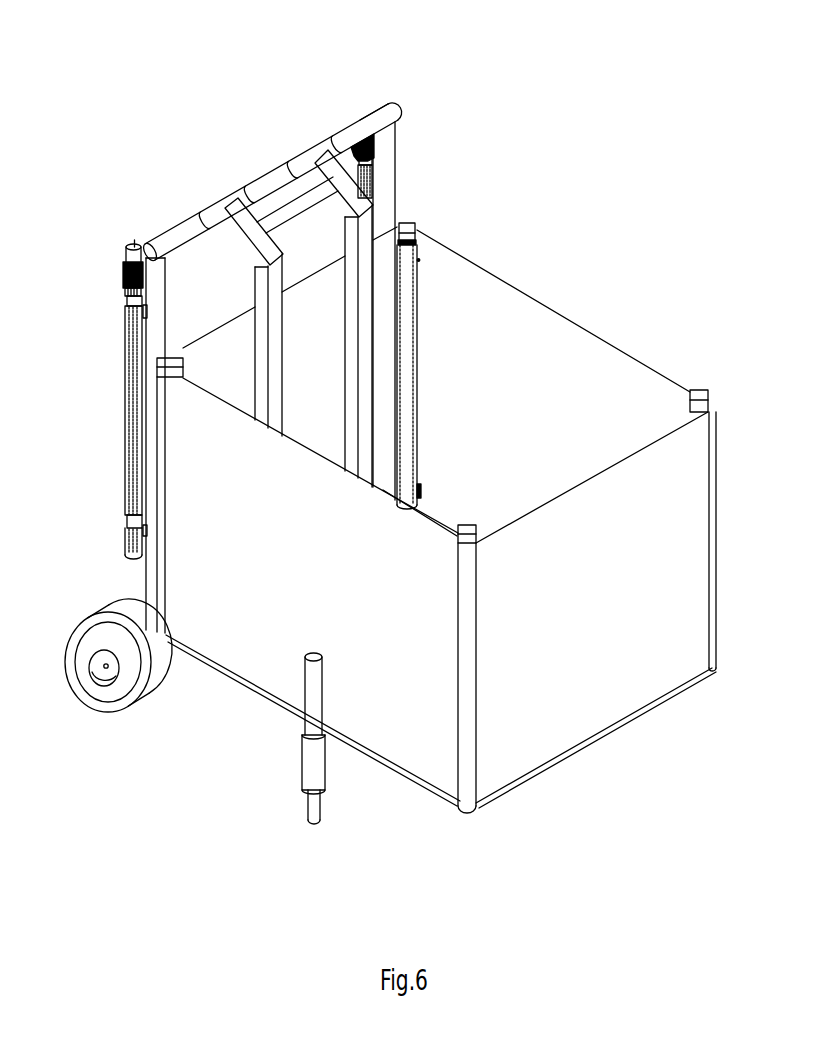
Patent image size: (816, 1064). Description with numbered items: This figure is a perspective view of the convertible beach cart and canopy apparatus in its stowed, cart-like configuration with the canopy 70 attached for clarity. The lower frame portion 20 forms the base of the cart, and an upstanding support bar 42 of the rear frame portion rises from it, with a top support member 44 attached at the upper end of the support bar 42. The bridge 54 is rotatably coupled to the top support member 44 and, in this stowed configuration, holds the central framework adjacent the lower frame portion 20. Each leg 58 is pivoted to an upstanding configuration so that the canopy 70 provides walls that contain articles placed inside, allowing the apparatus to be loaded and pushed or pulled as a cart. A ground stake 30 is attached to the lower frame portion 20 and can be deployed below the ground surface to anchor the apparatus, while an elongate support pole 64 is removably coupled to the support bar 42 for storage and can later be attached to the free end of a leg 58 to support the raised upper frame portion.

The lower frame portion 20 is at (238, 721).
The ground stake 30 is at (297, 816).
The upstanding support bar 42 is at (382, 202).
The top support member 44 is at (360, 127).
The bridge 54 is at (222, 234).
The leg 58 is at (408, 303).
The elongate support pole 64 is at (373, 182).
The canopy 70 is at (608, 382).